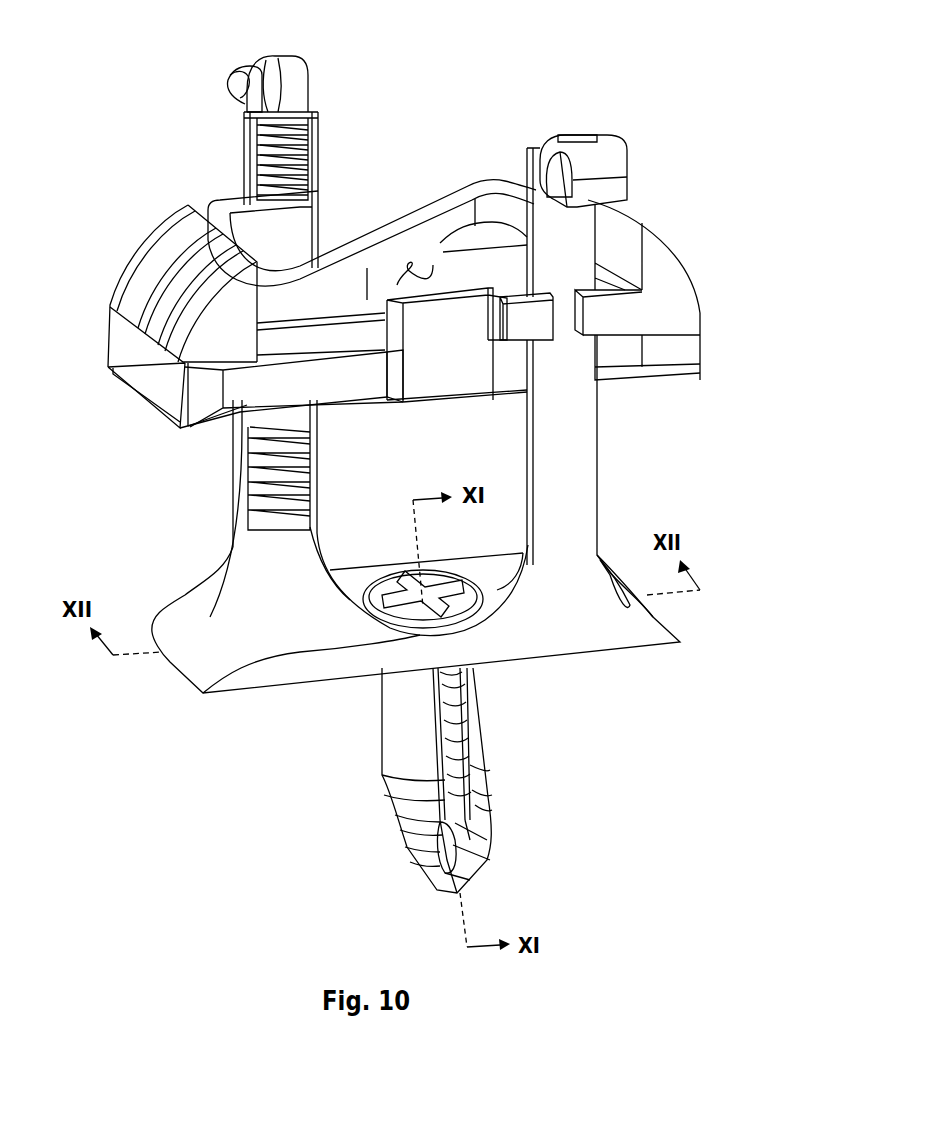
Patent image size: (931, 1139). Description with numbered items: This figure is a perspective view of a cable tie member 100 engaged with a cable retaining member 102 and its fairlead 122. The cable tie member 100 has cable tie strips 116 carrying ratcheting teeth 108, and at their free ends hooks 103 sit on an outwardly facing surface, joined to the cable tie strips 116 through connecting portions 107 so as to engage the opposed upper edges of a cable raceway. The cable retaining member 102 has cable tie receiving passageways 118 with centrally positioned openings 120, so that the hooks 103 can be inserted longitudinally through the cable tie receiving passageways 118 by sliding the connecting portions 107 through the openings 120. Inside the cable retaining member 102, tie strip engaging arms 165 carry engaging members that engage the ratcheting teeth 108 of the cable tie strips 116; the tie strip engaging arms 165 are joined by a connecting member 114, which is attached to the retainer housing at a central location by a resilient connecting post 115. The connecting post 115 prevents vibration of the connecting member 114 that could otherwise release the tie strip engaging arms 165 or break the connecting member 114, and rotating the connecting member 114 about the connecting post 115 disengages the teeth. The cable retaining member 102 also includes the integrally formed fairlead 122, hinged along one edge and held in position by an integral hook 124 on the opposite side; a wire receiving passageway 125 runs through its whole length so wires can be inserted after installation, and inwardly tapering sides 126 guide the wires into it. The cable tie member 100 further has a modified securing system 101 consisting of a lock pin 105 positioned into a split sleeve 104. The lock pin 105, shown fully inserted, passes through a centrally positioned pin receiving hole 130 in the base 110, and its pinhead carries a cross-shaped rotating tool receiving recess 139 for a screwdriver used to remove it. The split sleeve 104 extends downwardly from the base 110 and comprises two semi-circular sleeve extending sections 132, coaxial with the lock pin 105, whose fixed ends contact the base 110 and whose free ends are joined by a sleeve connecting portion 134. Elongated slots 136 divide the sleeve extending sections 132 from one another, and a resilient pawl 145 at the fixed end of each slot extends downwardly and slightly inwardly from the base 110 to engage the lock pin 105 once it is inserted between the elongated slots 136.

The cable tie member 100 is at (206, 549).
The securing system 101 is at (376, 687).
The cable retaining member 102 is at (708, 304).
The hooks 103 is at (290, 64).
The split sleeve 104 is at (400, 722).
The lock pin 105 is at (470, 740).
The connecting portions 107 is at (278, 86).
The ratcheting teeth 108 is at (298, 135).
The base 110 is at (245, 683).
The connecting member 114 is at (452, 228).
The connecting post 115 is at (433, 263).
The cable tie strips 116 is at (244, 155).
The cable tie receiving passageways 118 is at (597, 285).
The openings 120 is at (565, 316).
The fairlead 122 is at (147, 402).
The hook 124 is at (445, 380).
The wire receiving passageway 125 is at (147, 385).
The inwardly tapering sides 126 is at (120, 340).
The pin receiving hole 130 is at (457, 572).
The sleeve extending sections 132 is at (408, 768).
The sleeve connecting portion 134 is at (470, 862).
The elongated slots 136 is at (467, 722).
The rotating tool receiving recess 139 is at (410, 574).
The resilient pawl 145 is at (450, 692).
The tie strip engaging arms 165 is at (310, 222).